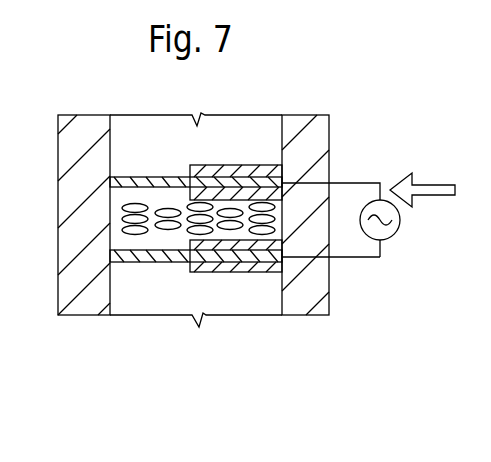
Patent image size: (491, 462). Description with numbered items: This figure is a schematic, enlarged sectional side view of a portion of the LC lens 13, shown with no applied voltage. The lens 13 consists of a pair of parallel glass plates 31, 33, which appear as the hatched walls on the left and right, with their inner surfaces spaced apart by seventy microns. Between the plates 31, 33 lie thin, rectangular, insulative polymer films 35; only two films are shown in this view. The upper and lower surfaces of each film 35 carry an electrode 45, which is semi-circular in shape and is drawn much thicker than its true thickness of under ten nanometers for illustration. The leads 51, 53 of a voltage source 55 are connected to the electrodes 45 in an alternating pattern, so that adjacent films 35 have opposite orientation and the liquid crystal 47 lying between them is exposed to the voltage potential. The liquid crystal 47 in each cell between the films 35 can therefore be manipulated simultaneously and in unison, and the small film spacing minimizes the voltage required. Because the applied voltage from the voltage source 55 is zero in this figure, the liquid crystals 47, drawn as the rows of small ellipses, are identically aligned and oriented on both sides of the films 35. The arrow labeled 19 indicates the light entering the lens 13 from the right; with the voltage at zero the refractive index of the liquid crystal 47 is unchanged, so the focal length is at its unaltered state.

The lens 13 is at (138, 382).
The incident light 19 is at (426, 176).
The glass plate 31 is at (85, 123).
The glass plate 33 is at (317, 133).
The polymer film 35 is at (143, 177).
The electrode 45 is at (222, 165).
The liquid crystal 47 is at (157, 238).
The lead 51 is at (350, 183).
The lead 53 is at (353, 257).
The voltage source 55 is at (392, 235).